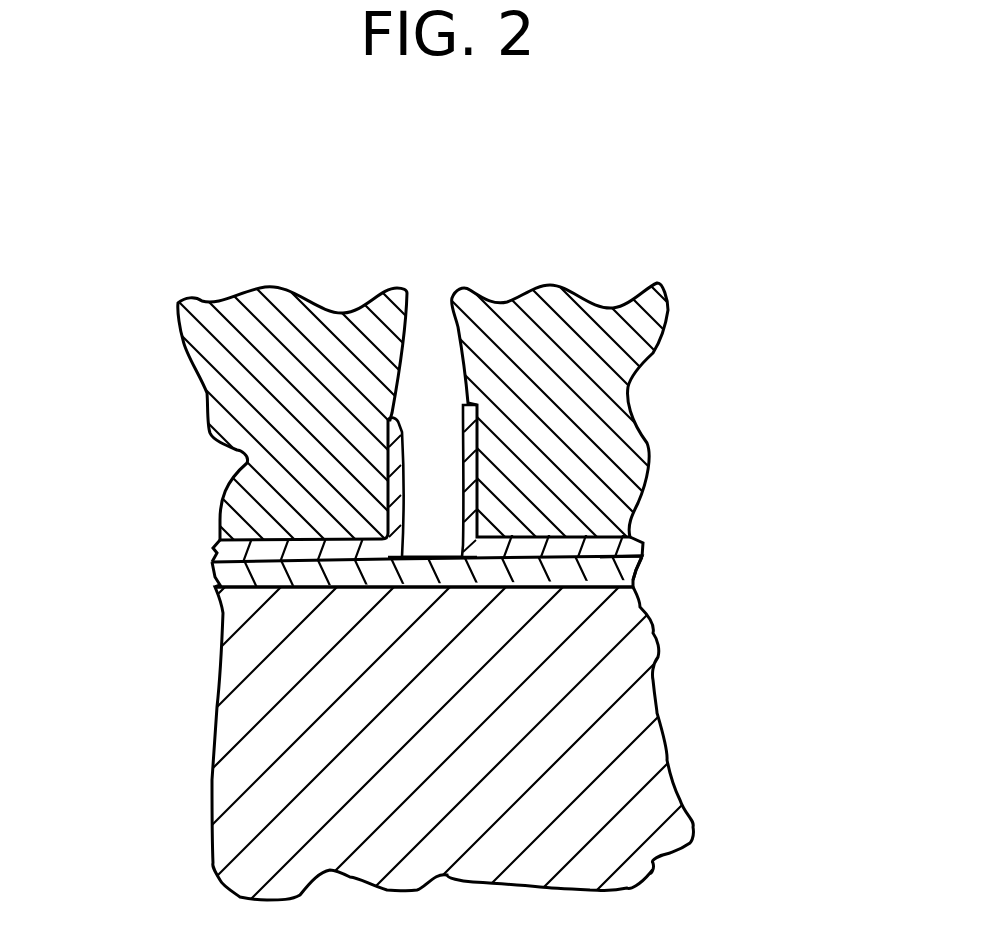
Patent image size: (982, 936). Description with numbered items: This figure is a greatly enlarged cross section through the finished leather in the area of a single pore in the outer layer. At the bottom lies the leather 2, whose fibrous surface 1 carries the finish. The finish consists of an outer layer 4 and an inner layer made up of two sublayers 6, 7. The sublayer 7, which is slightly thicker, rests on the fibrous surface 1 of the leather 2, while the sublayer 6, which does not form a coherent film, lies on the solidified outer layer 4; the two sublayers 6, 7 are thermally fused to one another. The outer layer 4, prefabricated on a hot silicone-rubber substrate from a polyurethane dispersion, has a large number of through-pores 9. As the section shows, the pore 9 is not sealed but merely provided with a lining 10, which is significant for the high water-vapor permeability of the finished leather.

The fibrous surface 1 is at (612, 575).
The leather 2 is at (513, 667).
The outer layer 4 is at (572, 348).
The sublayer 6 is at (225, 554).
The sublayer 7 is at (225, 575).
The through-pores 9 is at (443, 490).
The lining 10 is at (393, 488).